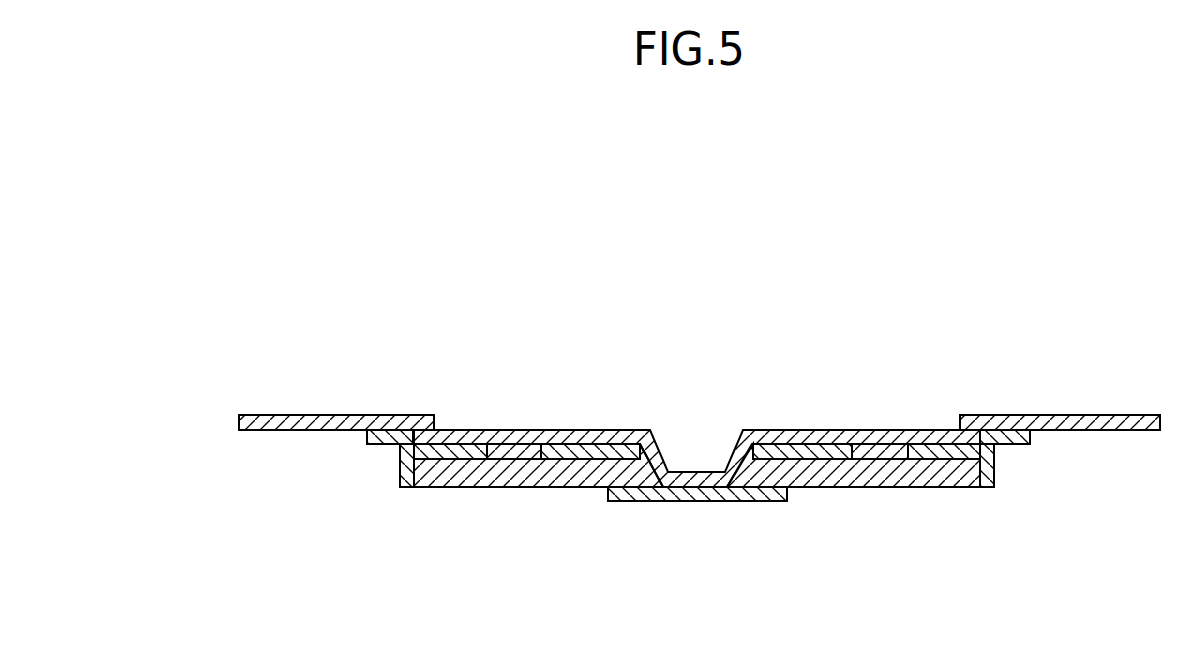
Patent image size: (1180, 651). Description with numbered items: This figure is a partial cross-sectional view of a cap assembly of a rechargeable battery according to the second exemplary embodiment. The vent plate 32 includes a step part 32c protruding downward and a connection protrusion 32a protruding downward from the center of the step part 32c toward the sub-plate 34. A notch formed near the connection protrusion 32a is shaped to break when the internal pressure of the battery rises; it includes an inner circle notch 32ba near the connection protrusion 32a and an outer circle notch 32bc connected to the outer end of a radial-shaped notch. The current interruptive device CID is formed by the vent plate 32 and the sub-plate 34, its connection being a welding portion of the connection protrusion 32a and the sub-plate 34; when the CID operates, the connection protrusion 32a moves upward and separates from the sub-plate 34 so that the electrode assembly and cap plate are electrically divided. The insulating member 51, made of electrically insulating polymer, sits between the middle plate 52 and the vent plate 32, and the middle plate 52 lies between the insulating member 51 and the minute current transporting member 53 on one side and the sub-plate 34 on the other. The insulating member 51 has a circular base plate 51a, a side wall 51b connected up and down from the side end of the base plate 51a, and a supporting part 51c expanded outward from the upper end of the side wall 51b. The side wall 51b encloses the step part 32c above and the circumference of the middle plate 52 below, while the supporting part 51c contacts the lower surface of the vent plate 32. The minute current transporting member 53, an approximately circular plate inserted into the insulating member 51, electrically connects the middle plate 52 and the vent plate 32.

The insulating member 51 is at (451, 459).
The base plate 51a is at (937, 456).
The side wall 51b is at (990, 472).
The supporting part 51c is at (382, 438).
The middle plate 52 is at (569, 480).
The minute current transporting member 53 is at (513, 456).
The vent plate 32 is at (825, 438).
The connection protrusion 32a is at (690, 470).
The inner circle notch 32ba is at (772, 439).
The outer circle notch 32bc is at (922, 439).
The step part 32c is at (960, 416).
The sub-plate 34 is at (760, 493).
The current interruptive device CID is at (837, 578).